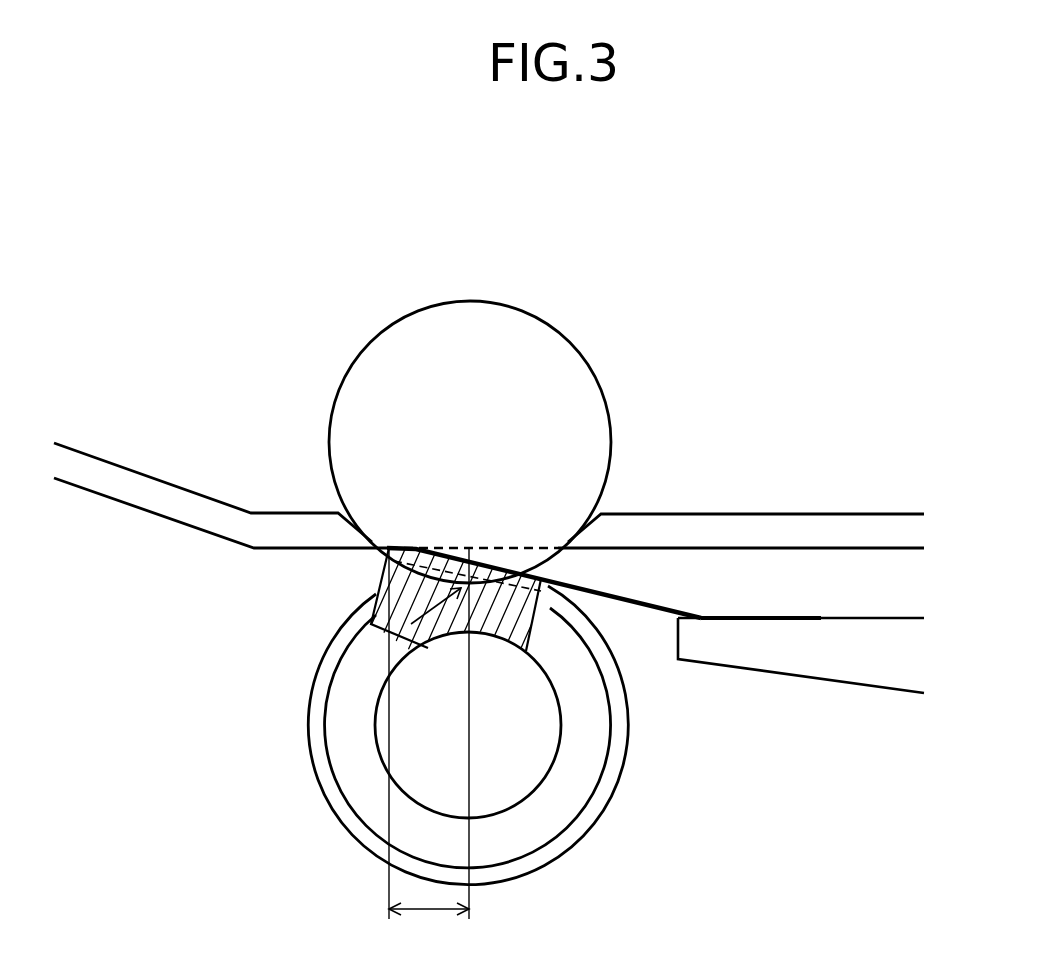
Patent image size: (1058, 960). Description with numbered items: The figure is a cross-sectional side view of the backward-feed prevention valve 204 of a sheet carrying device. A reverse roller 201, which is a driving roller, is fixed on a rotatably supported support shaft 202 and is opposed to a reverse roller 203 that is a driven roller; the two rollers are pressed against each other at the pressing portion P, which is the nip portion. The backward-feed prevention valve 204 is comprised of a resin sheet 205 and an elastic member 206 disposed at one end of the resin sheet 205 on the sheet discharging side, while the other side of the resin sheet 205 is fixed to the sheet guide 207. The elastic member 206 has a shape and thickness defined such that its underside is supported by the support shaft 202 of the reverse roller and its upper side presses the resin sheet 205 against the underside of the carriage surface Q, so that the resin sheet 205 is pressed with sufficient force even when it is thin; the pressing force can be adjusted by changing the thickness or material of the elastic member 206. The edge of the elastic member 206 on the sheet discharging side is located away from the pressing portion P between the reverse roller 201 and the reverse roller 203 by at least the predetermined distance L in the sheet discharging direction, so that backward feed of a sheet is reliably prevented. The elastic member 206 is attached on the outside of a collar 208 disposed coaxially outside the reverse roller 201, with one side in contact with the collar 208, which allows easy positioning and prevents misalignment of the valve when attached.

The reverse roller 201 is at (603, 772).
The support shaft 202 is at (520, 793).
The reverse roller 203 is at (480, 298).
The backward-feed prevention valve 204 is at (607, 583).
The resin sheet 205 is at (657, 597).
The elastic member 206 is at (530, 635).
The sheet guide 207 is at (773, 615).
The collar 208 is at (345, 822).
The predetermined distance L is at (429, 747).
The pressing portion P is at (385, 645).
The carriage surface Q is at (310, 548).